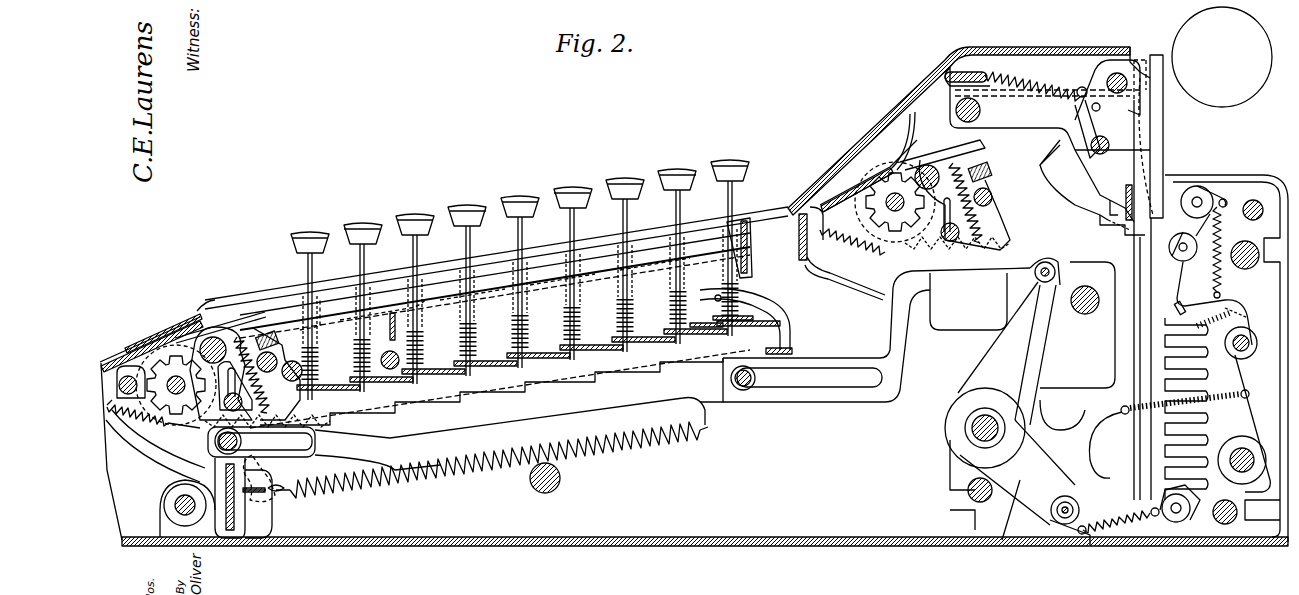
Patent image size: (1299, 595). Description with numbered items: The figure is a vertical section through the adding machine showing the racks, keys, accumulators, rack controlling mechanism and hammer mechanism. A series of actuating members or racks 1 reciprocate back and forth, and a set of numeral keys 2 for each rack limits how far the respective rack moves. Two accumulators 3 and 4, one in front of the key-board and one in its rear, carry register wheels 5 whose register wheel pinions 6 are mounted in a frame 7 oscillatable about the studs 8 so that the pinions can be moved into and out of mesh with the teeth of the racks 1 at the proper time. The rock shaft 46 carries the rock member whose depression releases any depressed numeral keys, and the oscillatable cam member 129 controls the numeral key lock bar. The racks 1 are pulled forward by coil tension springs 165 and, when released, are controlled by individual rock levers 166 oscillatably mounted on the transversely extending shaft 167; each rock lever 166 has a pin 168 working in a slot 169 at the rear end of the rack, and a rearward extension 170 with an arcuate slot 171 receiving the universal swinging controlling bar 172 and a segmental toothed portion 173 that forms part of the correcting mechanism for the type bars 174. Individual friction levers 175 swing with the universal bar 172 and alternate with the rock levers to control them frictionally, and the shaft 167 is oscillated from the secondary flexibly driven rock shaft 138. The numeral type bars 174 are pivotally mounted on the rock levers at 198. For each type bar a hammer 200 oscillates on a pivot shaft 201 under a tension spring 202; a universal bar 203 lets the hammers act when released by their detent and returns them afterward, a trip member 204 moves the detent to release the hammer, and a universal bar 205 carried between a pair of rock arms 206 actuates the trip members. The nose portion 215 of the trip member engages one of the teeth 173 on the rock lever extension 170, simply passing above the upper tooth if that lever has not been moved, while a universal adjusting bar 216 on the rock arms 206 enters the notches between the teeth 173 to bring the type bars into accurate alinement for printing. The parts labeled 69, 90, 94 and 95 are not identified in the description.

The racks 1 is at (810, 402).
The numeral keys 2 is at (318, 236).
The accumulator 3 is at (224, 306).
The accumulator 4 is at (875, 152).
The register wheels 5 is at (178, 330).
The register wheel pinions 6 is at (150, 352).
The frame 7 is at (135, 420).
The studs 8 is at (262, 458).
The rock shaft 46 is at (390, 370).
The shaft 69 is at (545, 493).
The pivot 90 is at (185, 517).
The arm 94 is at (248, 312).
The spring 95 is at (270, 340).
The oscillatable cam member 129 is at (393, 311).
The secondary flexibly driven rock shaft 138 is at (1082, 314).
The coil tension springs 165 is at (662, 440).
The rock levers 166 is at (1040, 378).
The transversely extending shaft 167 is at (962, 440).
The pin 168 is at (1040, 285).
The slot 169 is at (1058, 270).
The rearward extension 170 is at (1110, 405).
The arcuate slot 171 is at (1098, 536).
The universal swinging controlling bar 172 is at (1065, 525).
The segmental toothed portion 173 is at (1205, 500).
The type bars 174 is at (1163, 168).
The friction levers 175 is at (1018, 485).
The pivot 198 is at (1176, 522).
The hammer 200 is at (1110, 205).
The pivot shaft 201 is at (1128, 72).
The tension spring 202 is at (1022, 90).
The universal bar 203 is at (1098, 150).
The trip member 204 is at (1228, 292).
The universal bar 205 is at (1245, 352).
The rock arms 206 is at (1240, 385).
The nose portion 215 is at (1175, 309).
The universal adjusting bar 216 is at (1240, 315).